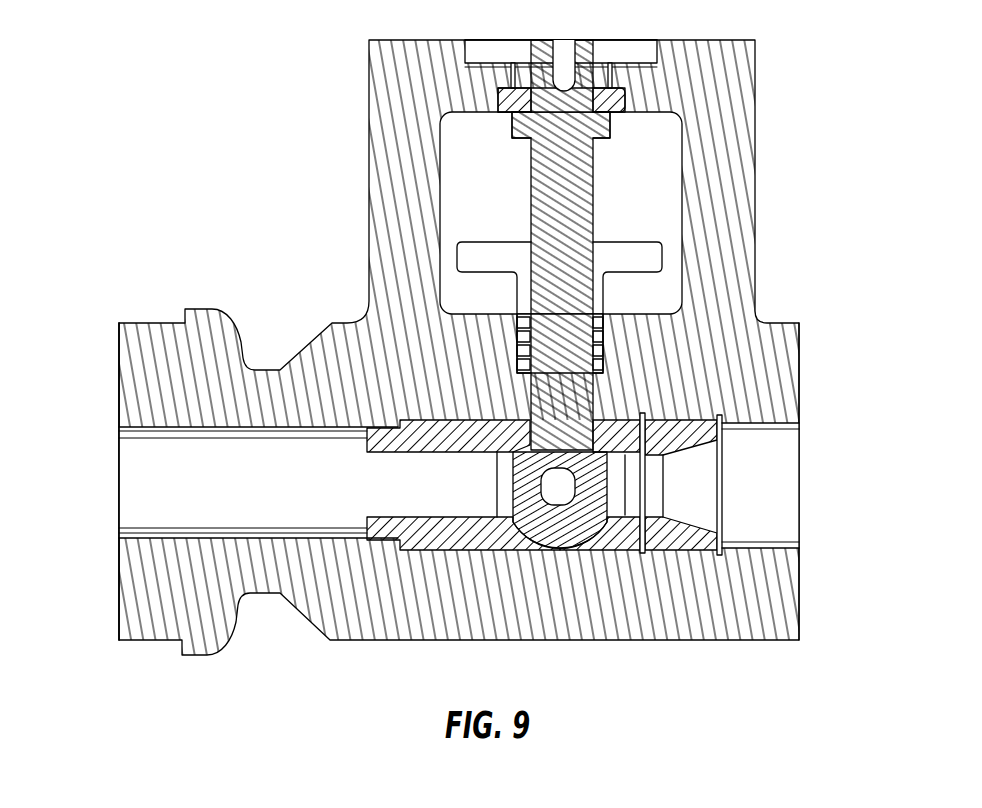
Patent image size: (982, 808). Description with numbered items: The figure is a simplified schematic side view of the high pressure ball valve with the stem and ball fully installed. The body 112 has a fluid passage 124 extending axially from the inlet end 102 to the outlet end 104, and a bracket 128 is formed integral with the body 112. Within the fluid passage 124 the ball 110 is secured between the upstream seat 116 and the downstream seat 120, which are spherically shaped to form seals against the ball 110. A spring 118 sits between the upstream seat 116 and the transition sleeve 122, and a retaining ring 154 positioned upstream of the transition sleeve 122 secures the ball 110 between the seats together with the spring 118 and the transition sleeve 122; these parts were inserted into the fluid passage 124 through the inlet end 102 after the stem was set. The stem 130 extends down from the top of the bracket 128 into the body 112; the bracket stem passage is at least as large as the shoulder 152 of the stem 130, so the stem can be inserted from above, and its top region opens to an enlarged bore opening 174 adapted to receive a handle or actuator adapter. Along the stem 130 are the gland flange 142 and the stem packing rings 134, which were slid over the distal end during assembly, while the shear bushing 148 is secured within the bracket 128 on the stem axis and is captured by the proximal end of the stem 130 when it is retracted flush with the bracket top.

The inlet end 102 is at (825, 324).
The outlet end 104 is at (93, 323).
The ball 110 is at (556, 545).
The body 112 is at (157, 630).
The upstream seat 116 is at (626, 545).
The spring 118 is at (648, 556).
The downstream seat 120 is at (428, 552).
The transition sleeve 122 is at (690, 545).
The fluid passage 124 is at (242, 452).
The bracket 128 is at (381, 42).
The stem 130 is at (530, 200).
The stem packing rings 134 is at (618, 315).
The gland flange 142 is at (640, 260).
The shear bushing 148 is at (626, 106).
The shoulder 152 is at (606, 138).
The retaining ring 154 is at (720, 535).
The enlarged bore opening 174 is at (640, 50).